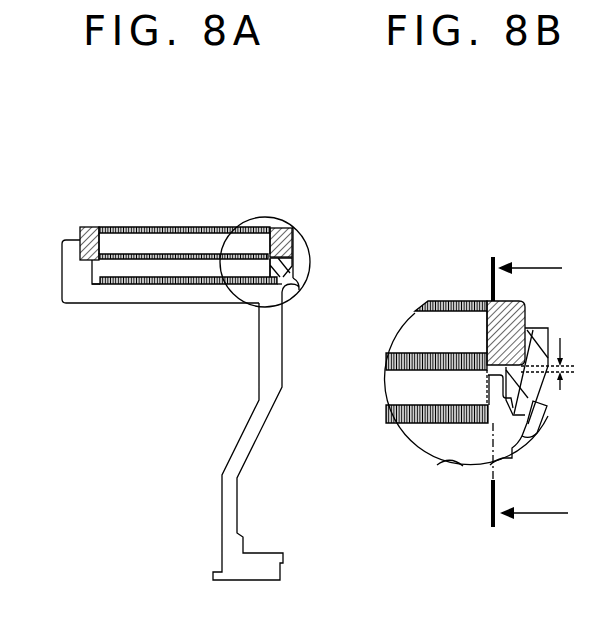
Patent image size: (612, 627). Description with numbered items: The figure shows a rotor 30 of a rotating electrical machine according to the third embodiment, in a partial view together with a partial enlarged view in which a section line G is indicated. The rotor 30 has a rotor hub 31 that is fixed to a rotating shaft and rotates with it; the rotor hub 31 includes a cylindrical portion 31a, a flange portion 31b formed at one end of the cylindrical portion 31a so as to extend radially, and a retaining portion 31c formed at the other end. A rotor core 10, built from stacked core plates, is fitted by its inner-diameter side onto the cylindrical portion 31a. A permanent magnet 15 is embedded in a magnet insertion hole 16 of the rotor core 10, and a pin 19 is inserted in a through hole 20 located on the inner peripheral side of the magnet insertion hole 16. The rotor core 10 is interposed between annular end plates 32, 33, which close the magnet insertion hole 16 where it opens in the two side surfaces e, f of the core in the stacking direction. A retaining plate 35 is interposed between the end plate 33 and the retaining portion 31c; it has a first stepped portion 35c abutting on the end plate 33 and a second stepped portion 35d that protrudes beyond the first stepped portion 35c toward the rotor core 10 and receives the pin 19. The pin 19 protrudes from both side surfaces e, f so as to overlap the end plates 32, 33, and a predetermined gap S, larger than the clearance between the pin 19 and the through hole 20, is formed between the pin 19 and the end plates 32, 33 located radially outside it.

In FIG. 8A, the rotor 30 is at (227, 124).
In FIG. 8A, the rotor core 10 is at (206, 224).
In FIG. 8B, the rotor core 10 is at (466, 296).
In FIG. 8A, the magnet insertion hole 16 is at (123, 239).
In FIG. 8B, the magnet insertion hole 16 is at (413, 315).
In FIG. 8A, the permanent magnet 15 is at (160, 238).
In FIG. 8B, the permanent magnet 15 is at (450, 313).
In FIG. 8A, the pin 19 is at (160, 268).
In FIG. 8B, the pin 19 is at (397, 390).
In FIG. 8A, the through hole 20 is at (127, 283).
In FIG. 8B, the through hole 20 is at (418, 401).
In FIG. 8A, the end plate 32 is at (90, 226).
In FIG. 8A, the end plate 33 is at (277, 228).
In FIG. 8B, the end plate 33 is at (526, 306).
In FIG. 8A, the retaining plate 35 is at (297, 240).
In FIG. 8B, the retaining plate 35 is at (532, 418).
In FIG. 8B, the first stepped portion 35c is at (536, 336).
In FIG. 8B, the second stepped portion 35d is at (515, 386).
In FIG. 8A, the rotor hub 31 is at (273, 378).
In FIG. 8A, the cylindrical portion 31a is at (205, 292).
In FIG. 8A, the flange portion 31b is at (68, 278).
In FIG. 8A, the retaining portion 31c is at (302, 278).
In FIG. 8B, the retaining portion 31c is at (536, 418).
In FIG. 8A, the side surface e is at (285, 291).
In FIG. 8A, the side surface f is at (88, 288).
In FIG. 8B, the line G- G is at (525, 393).
In FIG. 8B, the gap S is at (553, 364).